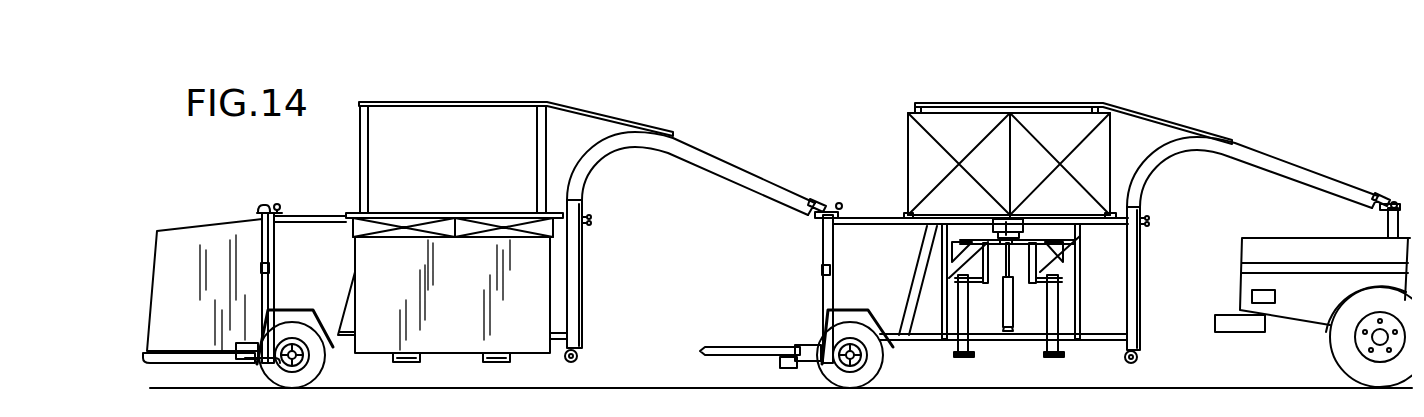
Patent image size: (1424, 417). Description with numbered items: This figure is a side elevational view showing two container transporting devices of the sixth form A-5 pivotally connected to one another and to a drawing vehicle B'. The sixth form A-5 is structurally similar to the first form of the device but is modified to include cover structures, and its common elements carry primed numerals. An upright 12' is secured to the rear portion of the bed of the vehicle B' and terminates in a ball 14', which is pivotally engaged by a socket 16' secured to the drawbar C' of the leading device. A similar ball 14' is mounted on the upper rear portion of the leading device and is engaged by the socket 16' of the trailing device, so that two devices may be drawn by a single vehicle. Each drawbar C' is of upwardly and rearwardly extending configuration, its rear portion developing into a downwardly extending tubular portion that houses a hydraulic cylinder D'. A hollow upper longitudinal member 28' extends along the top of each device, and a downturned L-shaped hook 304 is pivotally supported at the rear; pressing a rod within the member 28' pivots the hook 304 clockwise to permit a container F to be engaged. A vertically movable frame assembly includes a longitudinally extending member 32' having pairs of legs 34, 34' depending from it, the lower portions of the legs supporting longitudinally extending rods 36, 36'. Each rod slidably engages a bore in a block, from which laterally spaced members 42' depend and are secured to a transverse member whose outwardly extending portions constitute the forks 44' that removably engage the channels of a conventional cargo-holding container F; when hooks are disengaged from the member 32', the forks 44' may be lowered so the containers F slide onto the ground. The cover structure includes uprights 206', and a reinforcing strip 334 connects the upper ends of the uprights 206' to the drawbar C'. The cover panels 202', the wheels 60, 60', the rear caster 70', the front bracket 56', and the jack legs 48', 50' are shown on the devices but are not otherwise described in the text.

The reinforcing strip 334 is at (476, 103).
The uprights 206' is at (453, 159).
The downturned L-shaped hook 304 is at (262, 211).
The upper longitudinal member 28' is at (701, 242).
The cargo-holding container F is at (450, 295).
The rod 36 is at (455, 370).
The fork 44' is at (751, 349).
The trailer wheel 60' is at (295, 344).
The trailer wheel 60 is at (855, 363).
The rear caster wheel 70' is at (873, 364).
The hydraulic cylinder D' is at (875, 275).
The drawbar C' is at (972, 173).
The socket 16' is at (1109, 186).
The ball 14' is at (1091, 227).
The sixth form of the container transporting device A-5 is at (868, 217).
The cross-braced hopper panels 202' is at (1010, 165).
The longitudinally extending member 32' is at (986, 215).
The legs 34 is at (974, 281).
The legs 34' is at (1033, 254).
The rod 36' is at (1003, 317).
The laterally spaced members 42' is at (980, 313).
The right jack leg 48' is at (1035, 326).
The hydraulic cylinder 50' is at (1023, 285).
The front support bracket 56' is at (783, 366).
The flat bed vehicle B' is at (1319, 312).
The upright 12' is at (1362, 223).